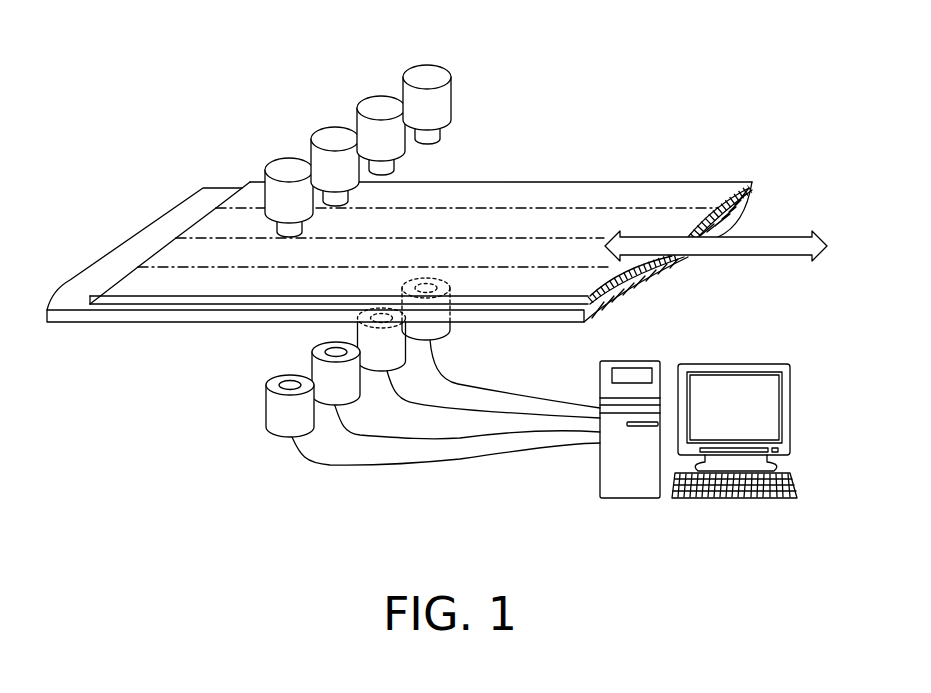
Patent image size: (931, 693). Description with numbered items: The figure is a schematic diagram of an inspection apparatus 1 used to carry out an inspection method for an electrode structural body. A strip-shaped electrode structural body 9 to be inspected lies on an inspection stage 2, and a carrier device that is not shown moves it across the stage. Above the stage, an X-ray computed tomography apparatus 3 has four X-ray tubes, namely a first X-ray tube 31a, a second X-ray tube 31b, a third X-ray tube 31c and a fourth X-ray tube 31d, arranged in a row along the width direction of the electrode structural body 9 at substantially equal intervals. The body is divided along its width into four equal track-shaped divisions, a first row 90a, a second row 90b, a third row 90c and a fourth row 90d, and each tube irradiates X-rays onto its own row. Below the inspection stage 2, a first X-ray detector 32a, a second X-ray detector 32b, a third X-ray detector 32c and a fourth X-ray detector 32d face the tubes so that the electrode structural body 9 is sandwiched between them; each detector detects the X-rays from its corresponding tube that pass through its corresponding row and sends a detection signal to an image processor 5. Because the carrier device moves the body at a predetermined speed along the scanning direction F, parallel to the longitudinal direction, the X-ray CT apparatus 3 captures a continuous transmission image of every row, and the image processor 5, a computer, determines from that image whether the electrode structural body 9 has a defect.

The inspection apparatus 1 is at (100, 77).
The inspection stage 2 is at (67, 298).
The X-ray computed tomography (CT) apparatus 3 is at (276, 76).
The first X-ray tube 31a is at (287, 170).
The second X-ray tube 31b is at (333, 138).
The third X-ray tube 31c is at (379, 108).
The fourth X-ray tube 31d is at (425, 77).
The first X-ray detector 32a is at (282, 428).
The second X-ray detector 32b is at (312, 366).
The third X-ray detector 32c is at (357, 334).
The fourth X-ray detector 32d is at (440, 338).
The image processor 5 is at (643, 361).
The electrode structural body 9 is at (617, 150).
The first row 90a is at (122, 287).
The second row 90b is at (158, 253).
The third row 90c is at (202, 222).
The fourth row 90d is at (242, 193).
The scanning direction F is at (779, 245).